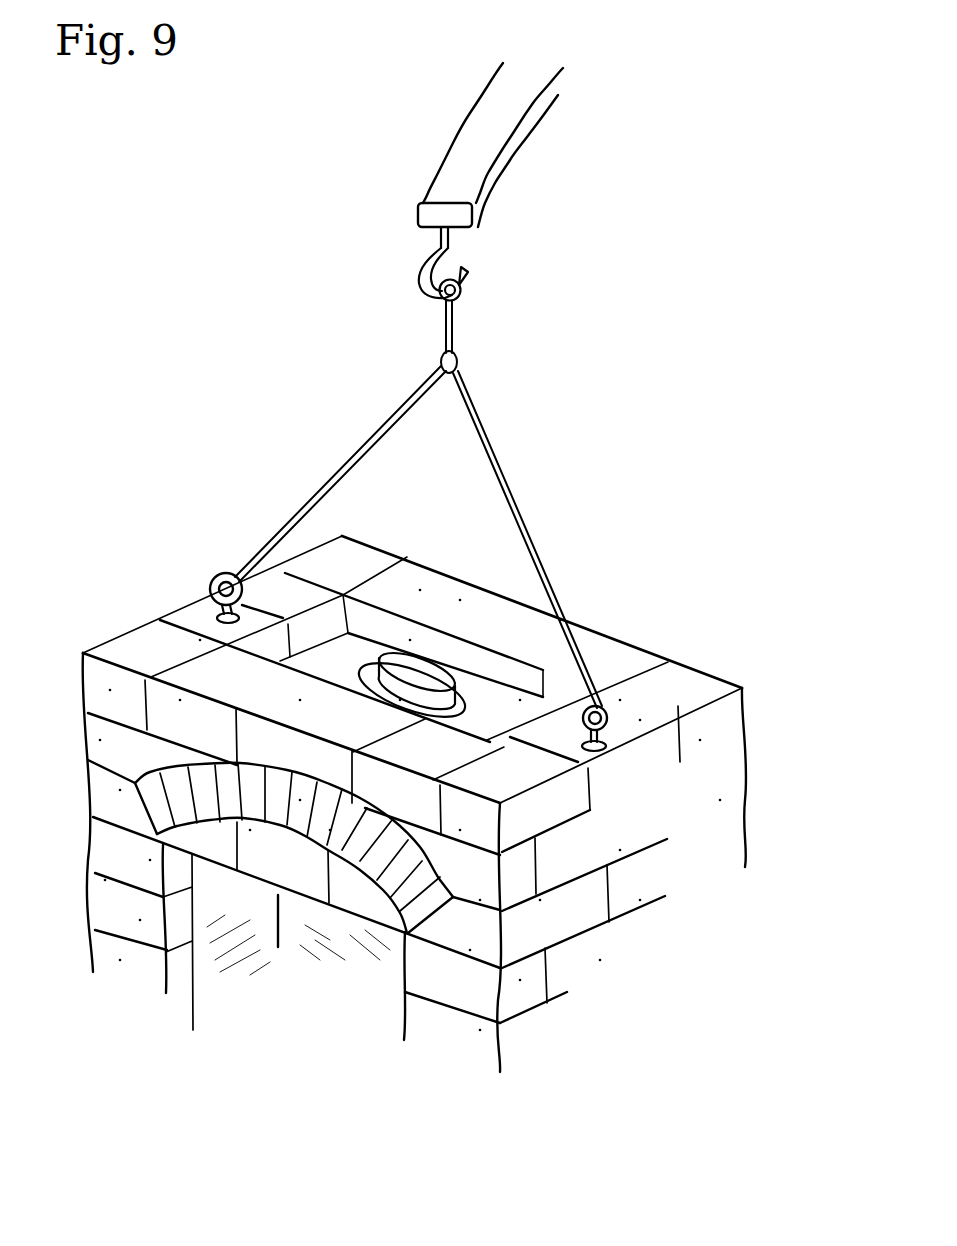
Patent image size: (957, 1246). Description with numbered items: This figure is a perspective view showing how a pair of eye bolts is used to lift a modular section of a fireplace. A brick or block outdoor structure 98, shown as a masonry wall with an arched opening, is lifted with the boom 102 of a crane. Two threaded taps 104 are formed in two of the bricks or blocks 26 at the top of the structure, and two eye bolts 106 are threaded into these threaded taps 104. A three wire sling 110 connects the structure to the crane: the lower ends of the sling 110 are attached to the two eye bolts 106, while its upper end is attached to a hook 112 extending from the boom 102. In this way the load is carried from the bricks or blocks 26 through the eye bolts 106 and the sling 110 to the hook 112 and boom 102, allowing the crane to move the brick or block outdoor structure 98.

The brick or block 26 is at (179, 617).
The brick or block outdoor structure 98 is at (458, 526).
The boom 102 is at (503, 153).
The threaded tap 104 is at (202, 600).
The eye bolt 106 is at (223, 579).
The three wire sling 110 is at (498, 448).
The hook 112 is at (422, 287).